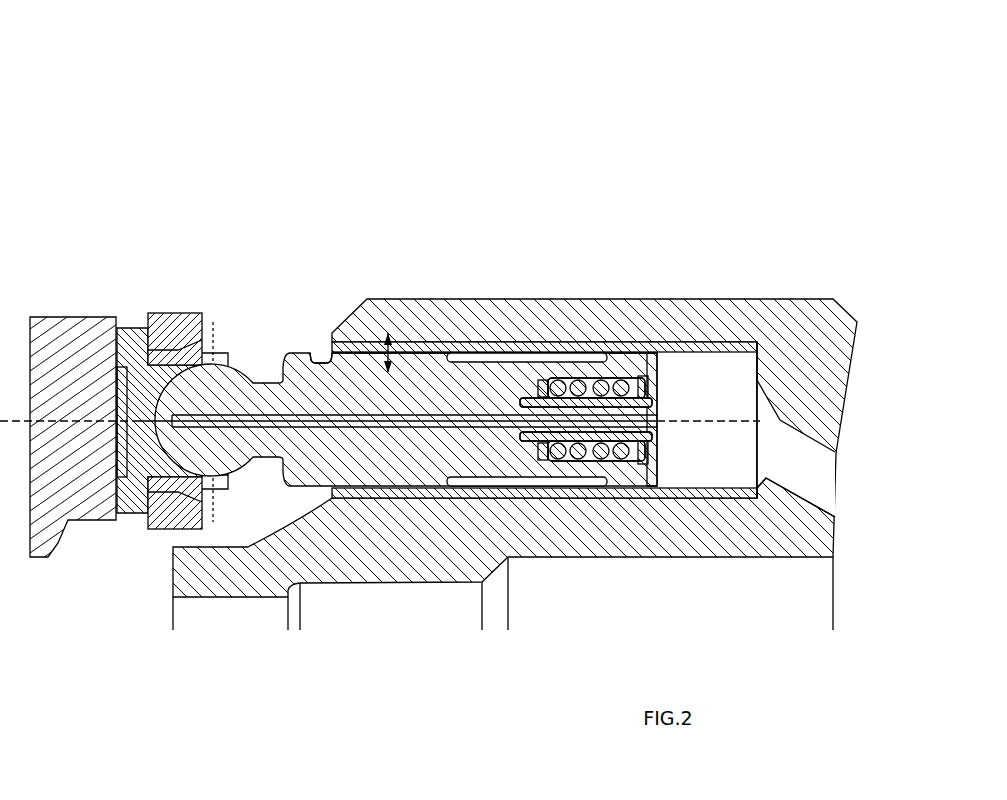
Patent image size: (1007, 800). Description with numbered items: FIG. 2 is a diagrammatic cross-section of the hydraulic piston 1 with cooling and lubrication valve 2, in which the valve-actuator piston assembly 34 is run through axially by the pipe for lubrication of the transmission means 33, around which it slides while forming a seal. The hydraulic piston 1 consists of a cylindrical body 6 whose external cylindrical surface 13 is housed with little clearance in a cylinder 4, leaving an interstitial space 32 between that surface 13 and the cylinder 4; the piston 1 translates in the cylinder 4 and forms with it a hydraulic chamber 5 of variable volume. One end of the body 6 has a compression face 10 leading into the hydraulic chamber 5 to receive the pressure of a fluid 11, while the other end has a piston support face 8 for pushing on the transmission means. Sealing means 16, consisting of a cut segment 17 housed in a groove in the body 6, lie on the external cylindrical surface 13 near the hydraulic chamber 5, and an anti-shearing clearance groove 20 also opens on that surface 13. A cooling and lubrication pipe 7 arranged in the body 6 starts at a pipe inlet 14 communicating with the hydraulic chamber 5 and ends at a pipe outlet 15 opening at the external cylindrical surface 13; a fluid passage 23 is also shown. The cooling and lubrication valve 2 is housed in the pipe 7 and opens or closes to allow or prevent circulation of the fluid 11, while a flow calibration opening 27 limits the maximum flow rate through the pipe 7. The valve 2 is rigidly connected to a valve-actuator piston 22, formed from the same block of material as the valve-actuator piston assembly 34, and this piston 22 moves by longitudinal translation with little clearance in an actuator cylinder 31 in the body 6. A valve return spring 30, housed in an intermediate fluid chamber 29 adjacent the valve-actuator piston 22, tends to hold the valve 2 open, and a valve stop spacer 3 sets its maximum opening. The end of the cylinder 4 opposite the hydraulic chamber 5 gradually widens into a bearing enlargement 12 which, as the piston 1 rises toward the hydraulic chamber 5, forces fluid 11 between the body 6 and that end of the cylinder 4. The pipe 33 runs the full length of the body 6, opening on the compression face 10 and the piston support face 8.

The hydraulic piston 1 is at (290, 300).
The cooling and lubrication valve 2 is at (550, 380).
The valve stop spacer 3 is at (133, 503).
The cylinder 4 is at (675, 357).
The hydraulic chamber 5 is at (748, 342).
The cylindrical body 6 is at (425, 376).
The cooling and lubrication pipe 7 is at (518, 380).
The piston support face 8 is at (131, 326).
The compression face 10 is at (668, 476).
The fluid 11 is at (668, 398).
The bearing enlargement 12 is at (309, 358).
The external cylindrical surface 13 is at (378, 497).
The pipe inlet 14 is at (742, 377).
The pipe outlet 15 is at (533, 397).
The sealing means 16 is at (625, 333).
The cut segment 17 is at (630, 441).
The anti-shearing clearance groove 20 is at (488, 486).
The valve-actuator piston 22 is at (647, 441).
The fluid passage 23 is at (727, 498).
The flow calibration opening 27 is at (643, 355).
The intermediate fluid chamber 29 is at (612, 380).
The valve return spring 30 is at (575, 380).
The actuator cylinder 31 is at (615, 460).
The interstitial space 32 is at (388, 333).
The pipe for lubrication of the transmission means 33 is at (262, 380).
The valve-actuator piston assembly 34 is at (668, 440).